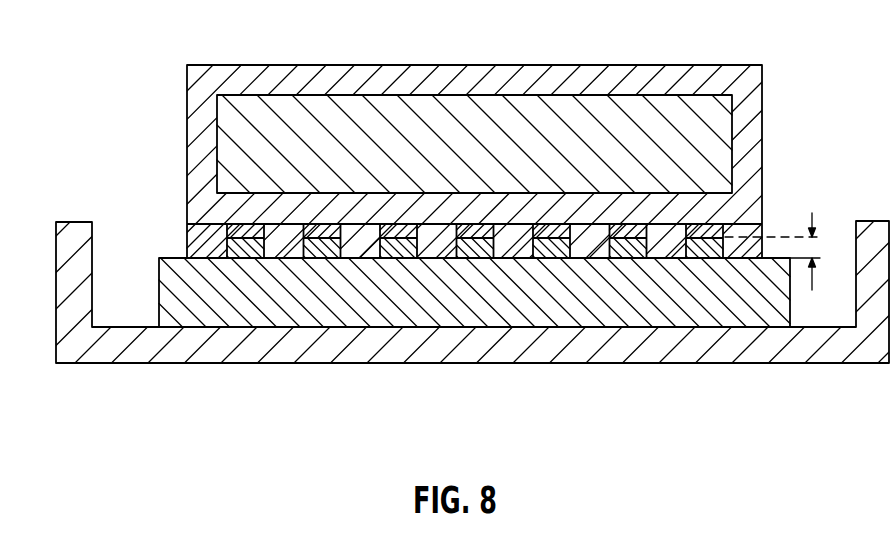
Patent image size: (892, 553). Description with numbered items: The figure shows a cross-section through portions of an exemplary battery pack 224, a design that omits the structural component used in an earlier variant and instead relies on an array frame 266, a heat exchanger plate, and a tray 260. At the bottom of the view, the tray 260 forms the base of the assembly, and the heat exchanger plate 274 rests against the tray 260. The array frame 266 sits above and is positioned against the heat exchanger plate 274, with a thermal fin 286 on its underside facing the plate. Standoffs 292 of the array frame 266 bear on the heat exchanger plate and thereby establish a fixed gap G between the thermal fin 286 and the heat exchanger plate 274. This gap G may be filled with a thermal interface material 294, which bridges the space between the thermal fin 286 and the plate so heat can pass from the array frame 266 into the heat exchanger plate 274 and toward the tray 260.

The battery pack 224 is at (683, 52).
The array frame 266 is at (747, 90).
The thermal fin 286 is at (712, 230).
The standoffs 292 is at (361, 247).
The thermal interface material 294 is at (551, 248).
The substrate 274 is at (565, 295).
The tray 260 is at (701, 336).
The gap G is at (814, 272).